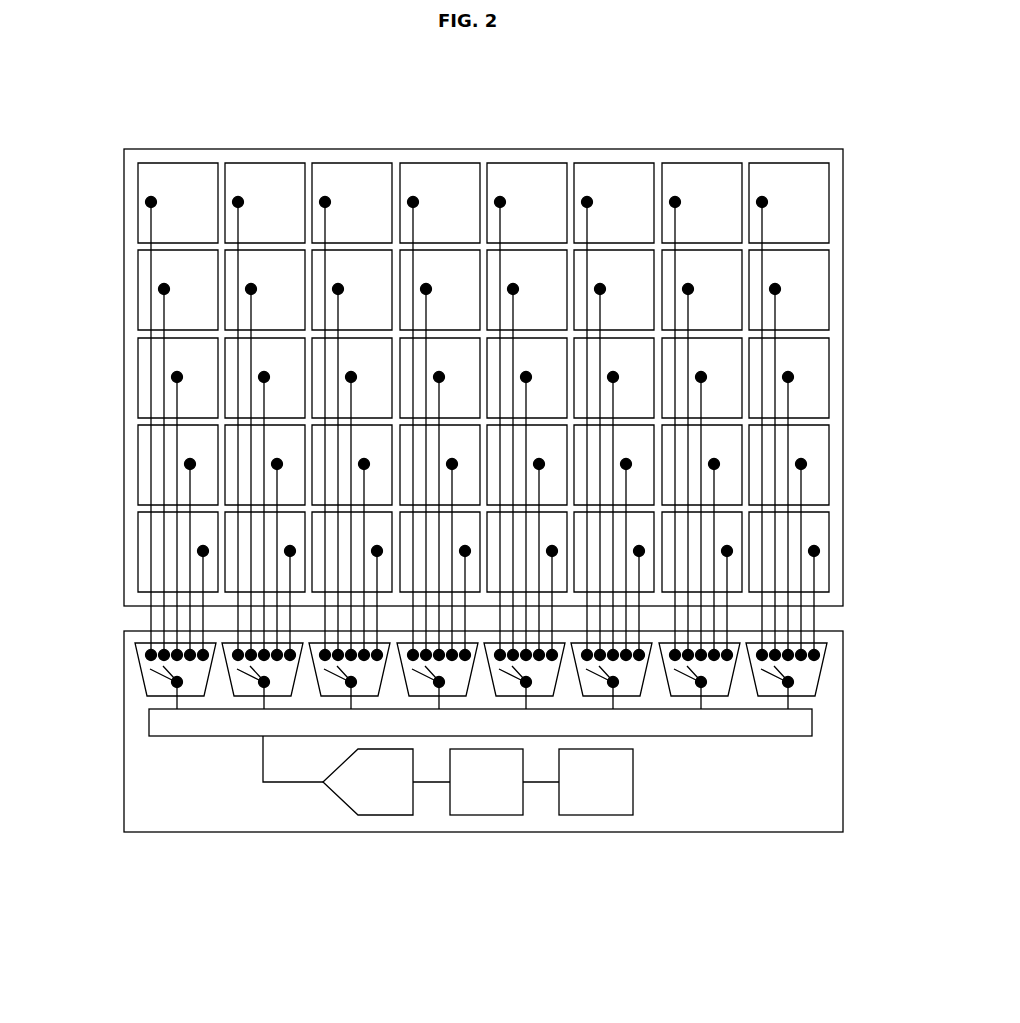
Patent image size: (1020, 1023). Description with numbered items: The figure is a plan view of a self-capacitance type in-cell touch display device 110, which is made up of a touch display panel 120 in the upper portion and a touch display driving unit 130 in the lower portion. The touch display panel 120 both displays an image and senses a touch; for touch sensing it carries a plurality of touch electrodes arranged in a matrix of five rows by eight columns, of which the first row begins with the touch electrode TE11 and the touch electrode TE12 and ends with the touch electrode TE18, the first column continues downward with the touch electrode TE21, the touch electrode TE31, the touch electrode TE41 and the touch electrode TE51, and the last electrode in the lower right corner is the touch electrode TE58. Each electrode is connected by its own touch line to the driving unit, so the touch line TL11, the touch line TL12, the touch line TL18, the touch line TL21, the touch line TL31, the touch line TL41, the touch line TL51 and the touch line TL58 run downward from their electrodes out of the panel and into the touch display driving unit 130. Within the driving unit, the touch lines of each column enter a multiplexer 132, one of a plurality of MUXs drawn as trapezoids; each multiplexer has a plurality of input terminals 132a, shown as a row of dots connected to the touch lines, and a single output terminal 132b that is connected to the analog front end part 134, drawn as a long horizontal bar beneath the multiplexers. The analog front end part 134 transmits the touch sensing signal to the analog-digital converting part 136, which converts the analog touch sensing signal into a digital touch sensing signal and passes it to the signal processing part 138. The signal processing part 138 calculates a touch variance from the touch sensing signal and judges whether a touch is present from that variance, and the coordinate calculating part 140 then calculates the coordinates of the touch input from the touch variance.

The in-cell touch display device 110 is at (513, 63).
The touch display panel 120 is at (843, 377).
The touch display driving unit 130 is at (843, 793).
The multiplexer 132 is at (140, 670).
The input terminals 132a is at (150, 636).
The output terminal 132b is at (175, 700).
The analog front end part 134 is at (149, 723).
The analog-digital converting part 136 is at (385, 815).
The signal processing part 138 is at (485, 815).
The coordinate calculating part 140 is at (597, 815).
The touch electrode TE11 is at (138, 183).
The touch line TL11 is at (151, 225).
The touch electrode TE12 is at (238, 163).
The touch line TL12 is at (238, 223).
The touch electrode TE18 is at (829, 185).
The touch line TL18 is at (762, 225).
The touch electrode TE21 is at (138, 268).
The touch line TL21 is at (164, 312).
The touch electrode TE31 is at (138, 354).
The touch line TL31 is at (177, 397).
The touch electrode TE41 is at (138, 440).
The touch line TL41 is at (190, 486).
The touch electrode TE51 is at (138, 532).
The touch line TL51 is at (203, 580).
The touch electrode TE58 is at (829, 525).
The touch line TL58 is at (814, 572).